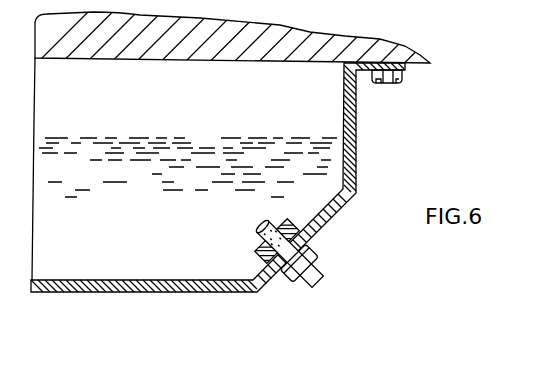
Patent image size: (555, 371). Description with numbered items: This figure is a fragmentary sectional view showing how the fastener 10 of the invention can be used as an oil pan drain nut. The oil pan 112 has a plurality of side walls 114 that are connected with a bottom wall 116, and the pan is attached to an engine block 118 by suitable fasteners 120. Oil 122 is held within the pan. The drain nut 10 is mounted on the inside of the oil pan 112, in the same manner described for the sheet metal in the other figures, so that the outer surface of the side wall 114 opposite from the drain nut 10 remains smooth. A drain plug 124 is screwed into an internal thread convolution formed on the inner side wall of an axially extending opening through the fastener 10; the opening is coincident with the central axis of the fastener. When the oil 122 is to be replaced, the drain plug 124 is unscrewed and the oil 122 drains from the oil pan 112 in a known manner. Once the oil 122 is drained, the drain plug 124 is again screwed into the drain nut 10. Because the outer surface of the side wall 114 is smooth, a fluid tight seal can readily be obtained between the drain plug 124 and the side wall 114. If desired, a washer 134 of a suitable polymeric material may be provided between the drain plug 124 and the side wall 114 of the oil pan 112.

The fastener 10 is at (292, 217).
The oil pan 112 is at (239, 193).
The side wall 114 is at (356, 156).
The bottom wall 116 is at (110, 293).
The engine block 118 is at (341, 44).
The fasteners 120 is at (396, 84).
The oil 122 is at (174, 157).
The drain plug 124 is at (271, 290).
The washer 134 is at (283, 264).